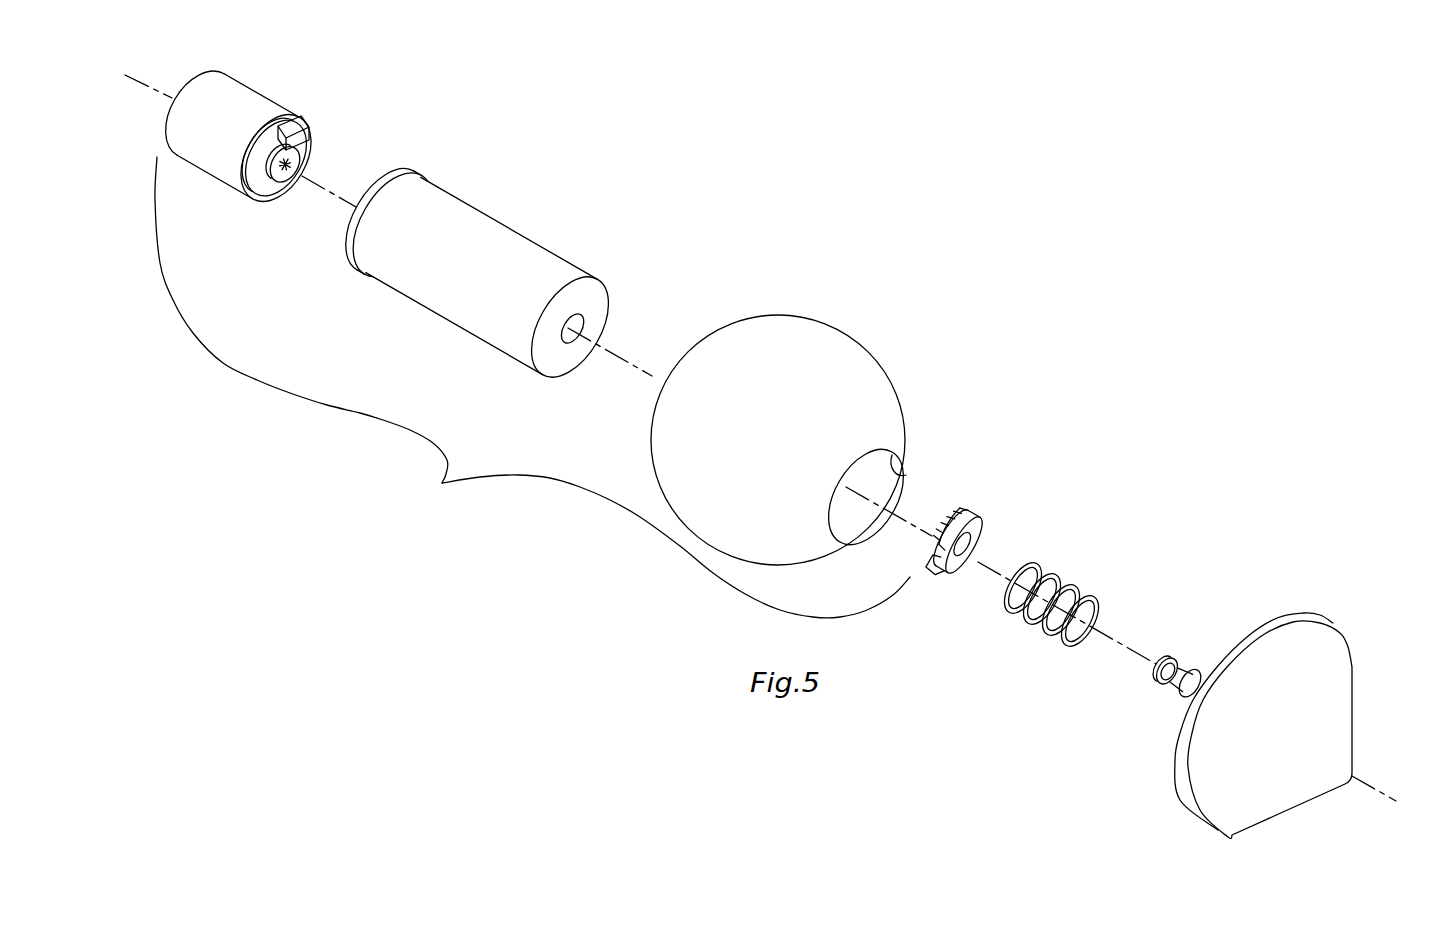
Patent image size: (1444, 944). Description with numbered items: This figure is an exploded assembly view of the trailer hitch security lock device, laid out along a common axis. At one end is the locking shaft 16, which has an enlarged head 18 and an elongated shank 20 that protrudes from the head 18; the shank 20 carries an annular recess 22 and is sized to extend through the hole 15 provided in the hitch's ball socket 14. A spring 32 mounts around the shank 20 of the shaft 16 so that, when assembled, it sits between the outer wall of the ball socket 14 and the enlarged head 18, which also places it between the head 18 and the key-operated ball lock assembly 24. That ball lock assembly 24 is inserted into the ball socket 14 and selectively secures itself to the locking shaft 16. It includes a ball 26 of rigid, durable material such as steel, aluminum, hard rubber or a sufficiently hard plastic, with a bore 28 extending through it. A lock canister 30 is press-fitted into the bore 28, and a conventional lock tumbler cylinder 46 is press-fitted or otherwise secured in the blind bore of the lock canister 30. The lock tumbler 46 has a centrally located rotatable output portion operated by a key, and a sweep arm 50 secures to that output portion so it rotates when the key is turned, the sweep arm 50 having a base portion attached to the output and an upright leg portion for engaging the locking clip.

The ball socket 14 is at (937, 565).
The hole 15 is at (965, 560).
The locking shaft 16 is at (1282, 728).
The enlarged head 18 is at (1190, 800).
The elongated shank 20 is at (1183, 692).
The annular recess 22 is at (1186, 664).
The key-operated ball lock assembly 24 is at (442, 483).
The ball 26 is at (857, 340).
The bore 28 is at (905, 473).
The lock canister 30 is at (490, 222).
The spring 32 is at (1082, 580).
The lock tumbler cylinder 46 is at (252, 136).
The sweep arm 50 is at (283, 163).